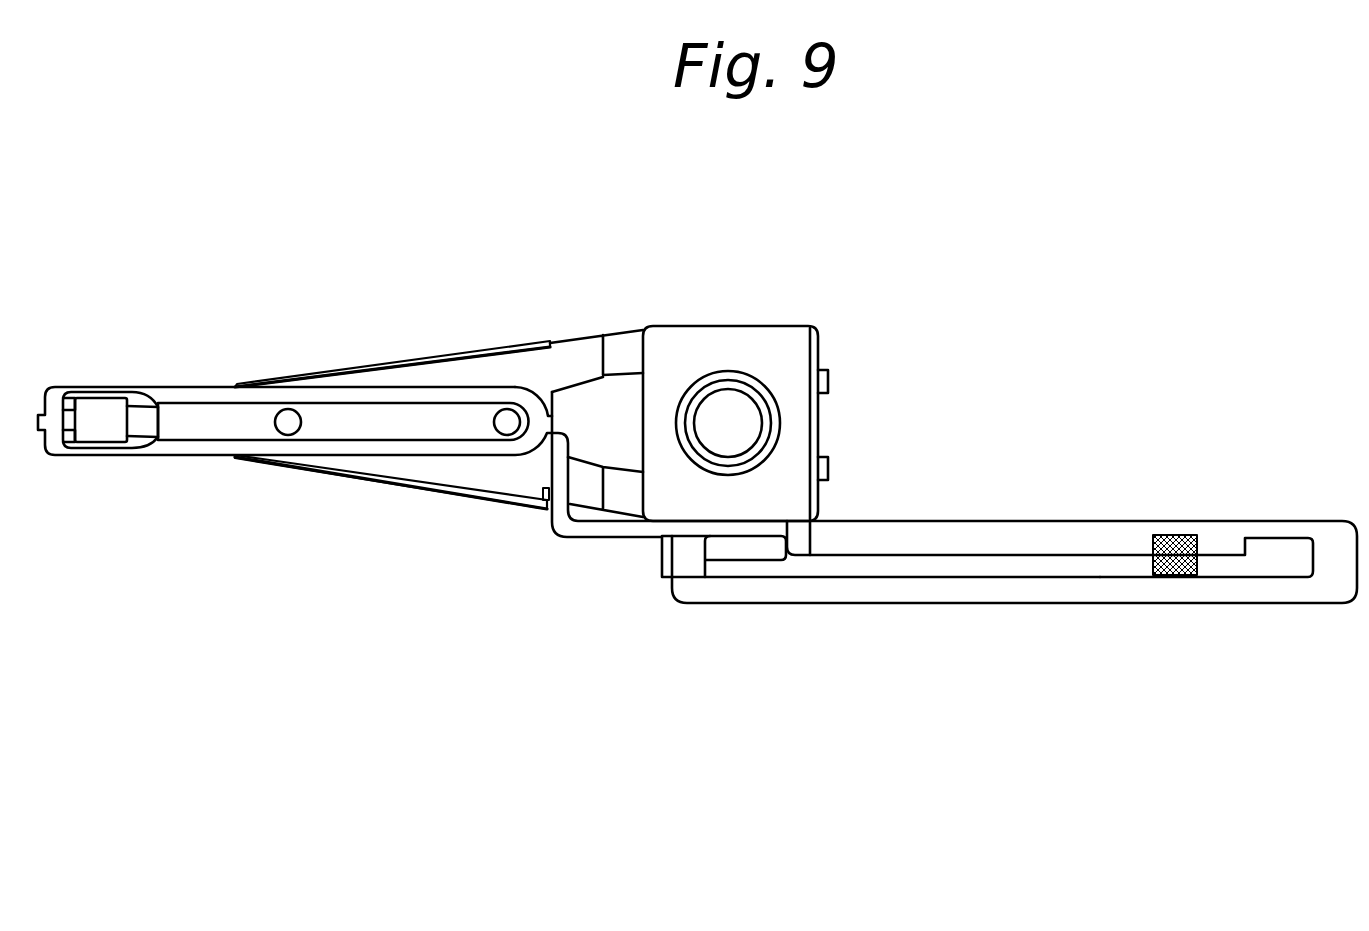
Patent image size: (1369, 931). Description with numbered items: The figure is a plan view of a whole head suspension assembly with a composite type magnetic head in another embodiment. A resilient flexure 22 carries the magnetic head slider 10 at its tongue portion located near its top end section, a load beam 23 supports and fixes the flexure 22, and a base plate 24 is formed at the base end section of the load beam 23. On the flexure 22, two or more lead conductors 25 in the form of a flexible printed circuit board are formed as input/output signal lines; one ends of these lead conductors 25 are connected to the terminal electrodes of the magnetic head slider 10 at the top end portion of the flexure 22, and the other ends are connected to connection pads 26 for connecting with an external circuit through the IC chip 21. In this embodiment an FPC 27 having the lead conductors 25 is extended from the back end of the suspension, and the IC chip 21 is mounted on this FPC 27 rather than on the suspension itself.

The magnetic head slider 10 is at (95, 430).
The IC chip 21 is at (1178, 577).
The flexure 22 is at (229, 428).
The load beam 23 is at (462, 477).
The base plate 24 is at (783, 337).
The lead conductors 25 is at (463, 443).
The connection pads 26 is at (1291, 550).
The FPC 27 is at (1110, 537).